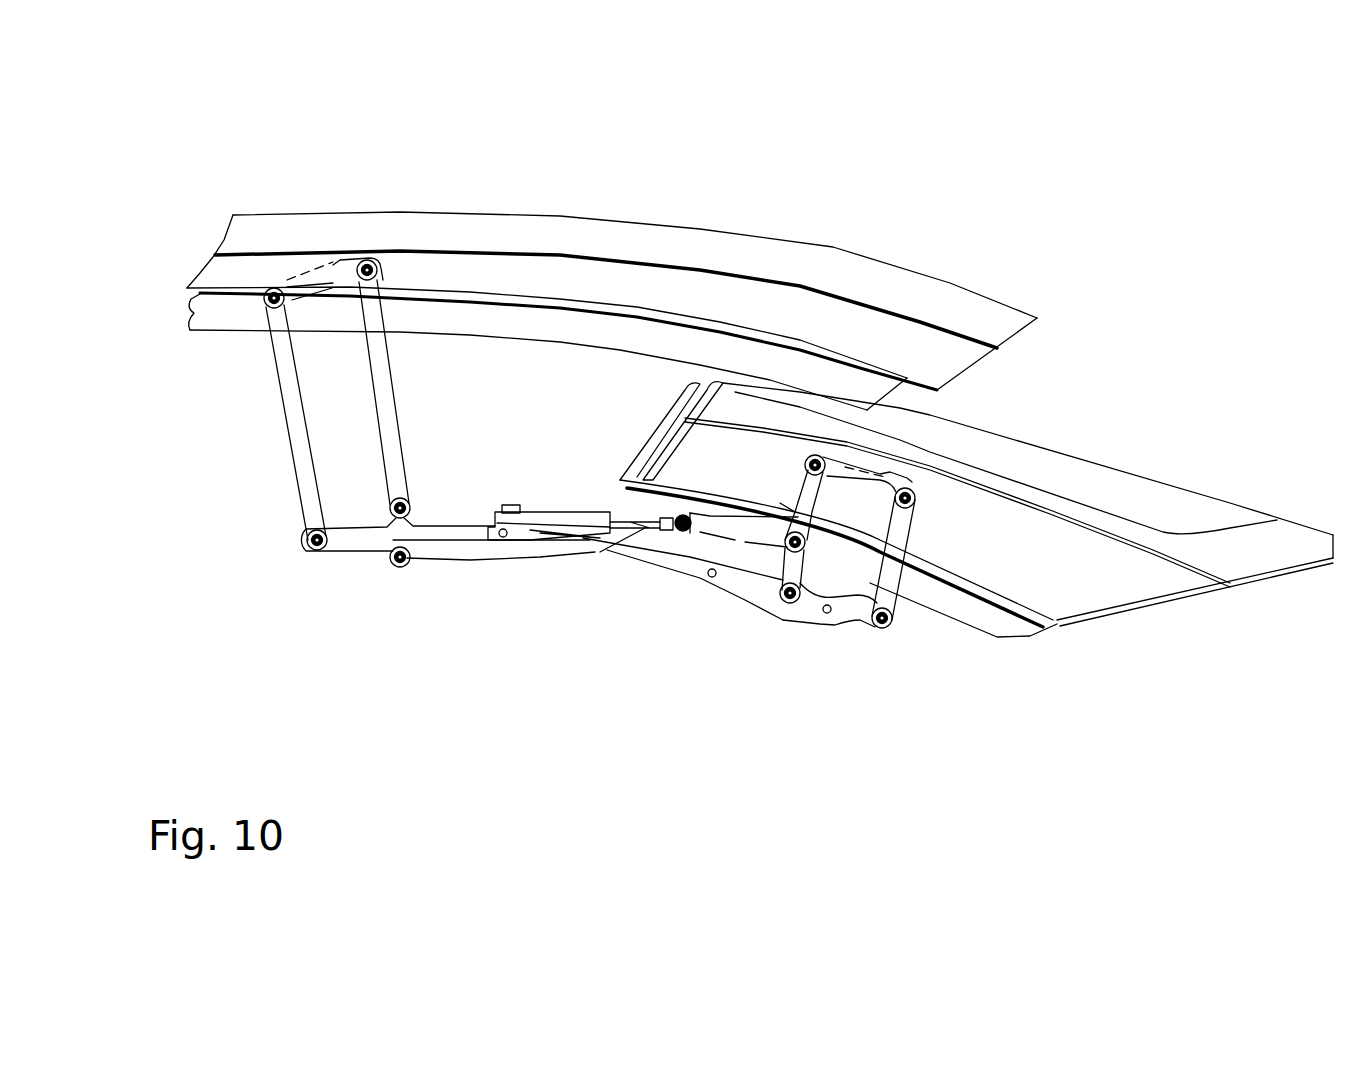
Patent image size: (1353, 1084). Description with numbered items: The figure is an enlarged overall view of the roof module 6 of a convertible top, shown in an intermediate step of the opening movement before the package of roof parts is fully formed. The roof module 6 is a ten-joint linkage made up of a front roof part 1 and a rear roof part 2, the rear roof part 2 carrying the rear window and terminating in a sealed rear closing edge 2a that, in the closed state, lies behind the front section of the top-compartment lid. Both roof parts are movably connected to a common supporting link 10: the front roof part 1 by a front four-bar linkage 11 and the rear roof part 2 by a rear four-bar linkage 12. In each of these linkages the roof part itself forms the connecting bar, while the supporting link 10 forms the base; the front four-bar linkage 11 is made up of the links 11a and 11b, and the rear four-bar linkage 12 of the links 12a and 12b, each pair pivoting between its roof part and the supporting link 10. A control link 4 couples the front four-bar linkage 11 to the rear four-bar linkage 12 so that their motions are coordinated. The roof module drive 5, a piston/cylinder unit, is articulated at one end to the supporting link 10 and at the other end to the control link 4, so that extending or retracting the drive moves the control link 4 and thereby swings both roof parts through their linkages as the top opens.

The front roof part 1 is at (515, 268).
The rear roof part 2 is at (1050, 495).
The rear closing edge 2a is at (1215, 593).
The control link 4 is at (452, 560).
The roof module drive 5 is at (545, 506).
The roof module 6 is at (657, 783).
The supporting link 10 is at (363, 542).
The front four-bar linkage 11 is at (351, 449).
The link of the front four-bar linkage 11a is at (295, 428).
The link of the front four-bar linkage 11b is at (398, 427).
The rear four-bar linkage 12 is at (865, 516).
The link of the rear four-bar linkage 12a is at (792, 570).
The link of the rear four-bar linkage 12b is at (902, 527).